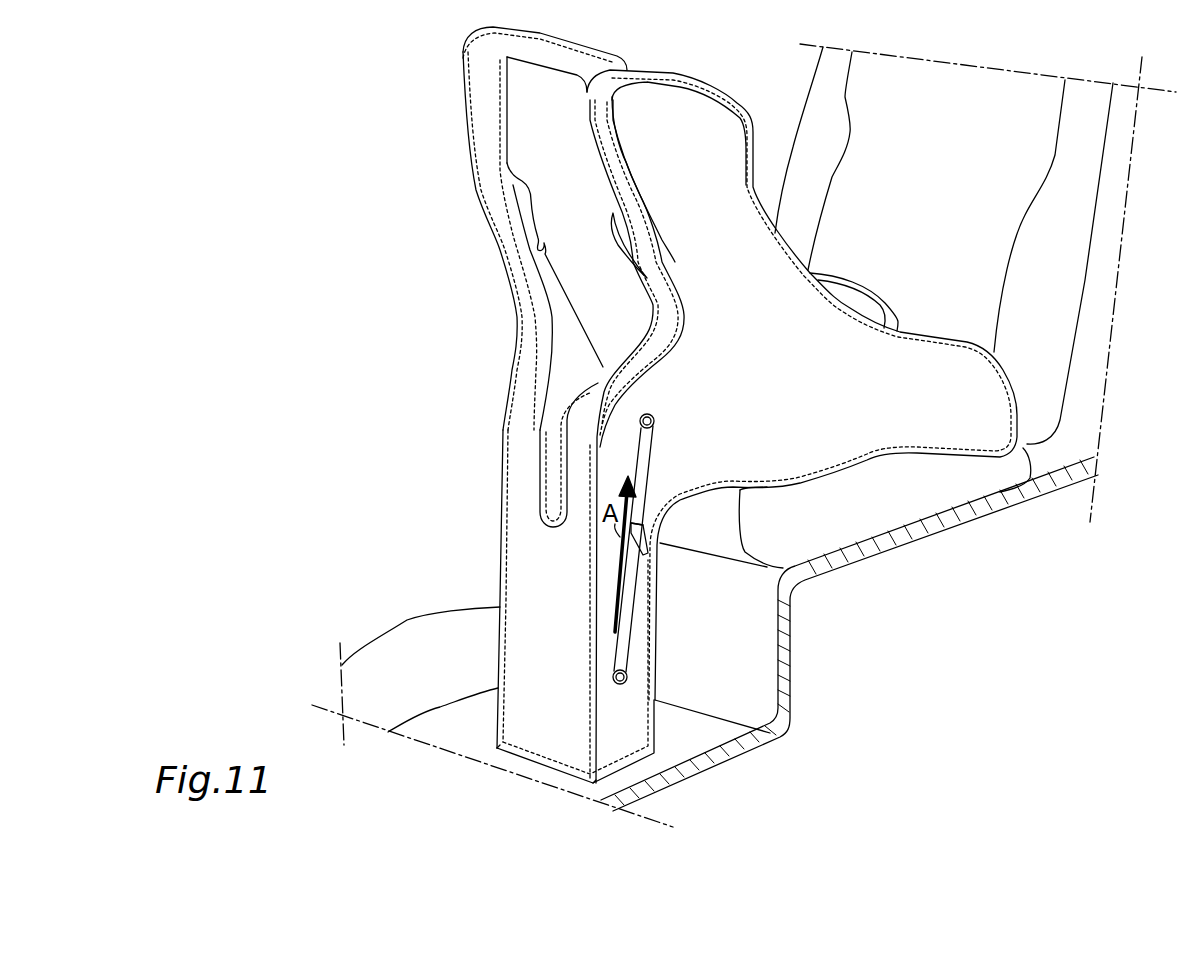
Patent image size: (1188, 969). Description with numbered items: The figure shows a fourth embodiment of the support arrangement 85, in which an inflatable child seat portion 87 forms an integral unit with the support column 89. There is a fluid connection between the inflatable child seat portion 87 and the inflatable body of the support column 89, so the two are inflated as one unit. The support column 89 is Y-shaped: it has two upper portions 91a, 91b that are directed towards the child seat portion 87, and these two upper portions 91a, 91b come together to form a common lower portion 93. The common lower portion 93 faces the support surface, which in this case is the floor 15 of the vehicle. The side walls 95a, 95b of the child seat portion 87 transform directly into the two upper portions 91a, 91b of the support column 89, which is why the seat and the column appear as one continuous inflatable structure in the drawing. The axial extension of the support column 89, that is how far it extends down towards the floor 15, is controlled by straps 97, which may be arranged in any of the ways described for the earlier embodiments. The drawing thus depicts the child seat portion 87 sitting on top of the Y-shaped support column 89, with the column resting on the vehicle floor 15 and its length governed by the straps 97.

The support arrangement 85 is at (410, 82).
The side wall 95b is at (483, 126).
The inflatable child seat portion 87 is at (565, 210).
The side wall 95a is at (766, 286).
The upper portion 91a is at (621, 440).
The upper portion 91b is at (527, 432).
The support column 89 is at (547, 622).
The common lower portion 93 is at (538, 745).
The straps 97 is at (632, 608).
The floor 15 is at (687, 748).